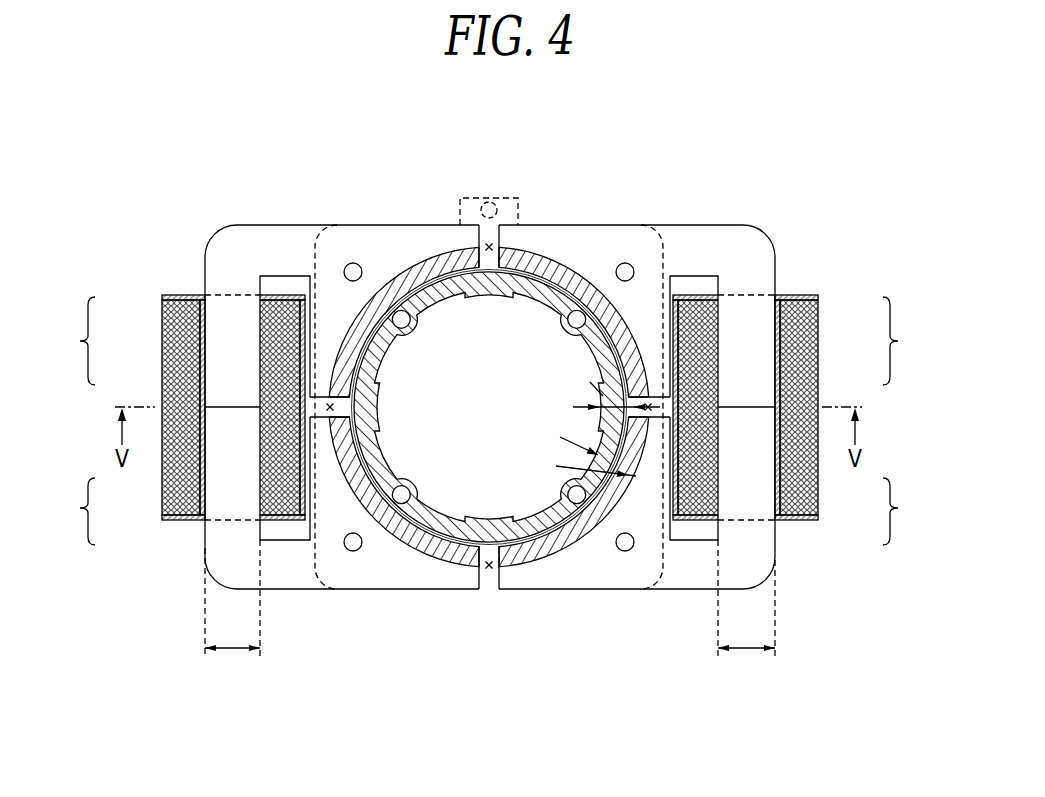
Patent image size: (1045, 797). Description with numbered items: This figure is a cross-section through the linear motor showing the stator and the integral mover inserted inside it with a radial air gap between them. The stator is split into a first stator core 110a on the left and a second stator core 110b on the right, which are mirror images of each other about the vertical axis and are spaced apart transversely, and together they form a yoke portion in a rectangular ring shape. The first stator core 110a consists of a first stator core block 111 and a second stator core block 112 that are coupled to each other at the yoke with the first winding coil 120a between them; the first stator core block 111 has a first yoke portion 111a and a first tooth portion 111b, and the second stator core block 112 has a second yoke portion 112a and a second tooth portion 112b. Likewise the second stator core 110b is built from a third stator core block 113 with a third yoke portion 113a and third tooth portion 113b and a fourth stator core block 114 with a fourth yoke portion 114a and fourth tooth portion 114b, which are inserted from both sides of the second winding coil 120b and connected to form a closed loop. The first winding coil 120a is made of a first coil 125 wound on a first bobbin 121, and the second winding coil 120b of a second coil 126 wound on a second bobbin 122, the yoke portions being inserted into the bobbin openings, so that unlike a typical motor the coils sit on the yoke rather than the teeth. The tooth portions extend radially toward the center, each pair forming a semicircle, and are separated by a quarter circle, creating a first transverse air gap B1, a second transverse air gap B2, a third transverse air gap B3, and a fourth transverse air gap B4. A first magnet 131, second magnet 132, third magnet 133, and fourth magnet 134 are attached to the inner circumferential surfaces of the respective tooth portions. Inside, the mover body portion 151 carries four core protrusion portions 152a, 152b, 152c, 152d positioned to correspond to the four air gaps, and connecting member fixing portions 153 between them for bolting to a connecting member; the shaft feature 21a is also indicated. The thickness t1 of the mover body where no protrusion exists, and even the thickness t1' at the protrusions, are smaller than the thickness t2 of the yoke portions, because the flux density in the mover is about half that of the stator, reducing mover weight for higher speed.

The first stator core 110a is at (182, 408).
The second stator core 110b is at (798, 408).
The first stator core block 111 is at (330, 320).
The second stator core block 112 is at (320, 470).
The third stator core block 113 is at (650, 470).
The fourth stator core block 114 is at (650, 322).
The first yoke portion 111a is at (225, 258).
The second yoke portion 112a is at (224, 558).
The third yoke portion 113a is at (754, 558).
The fourth yoke portion 114a is at (753, 258).
The first tooth portion 111b is at (383, 250).
The second tooth portion 112b is at (383, 565).
The third tooth portion 113b is at (596, 565).
The fourth tooth portion 114b is at (596, 250).
The first winding coil 120a is at (170, 420).
The second winding coil 120b is at (811, 420).
The first bobbin 121 is at (172, 520).
The second bobbin 122 is at (805, 518).
The first coil 125 is at (163, 487).
The second coil 126 is at (815, 487).
The first magnet 131 is at (436, 247).
The second magnet 132 is at (437, 567).
The third magnet 133 is at (541, 567).
The fourth magnet 134 is at (541, 247).
The mover body portion 151 is at (552, 296).
The core protrusion portion 152a is at (380, 421).
The core protrusion portion 152b is at (489, 521).
The core protrusion portion 152c is at (601, 426).
The core protrusion portion 152d is at (497, 297).
The connecting member fixing portion 153 is at (411, 331).
The protrusion 21a is at (498, 197).
The first transverse air gap B1 is at (331, 401).
The second transverse air gap B2 is at (487, 570).
The third transverse air gap B3 is at (648, 401).
The fourth transverse air gap B4 is at (487, 242).
The thickness of mover body portion t1 is at (583, 457).
The thickness of core protrusion portion t1' is at (615, 384).
The thickness of yoke portion t2 is at (490, 611).